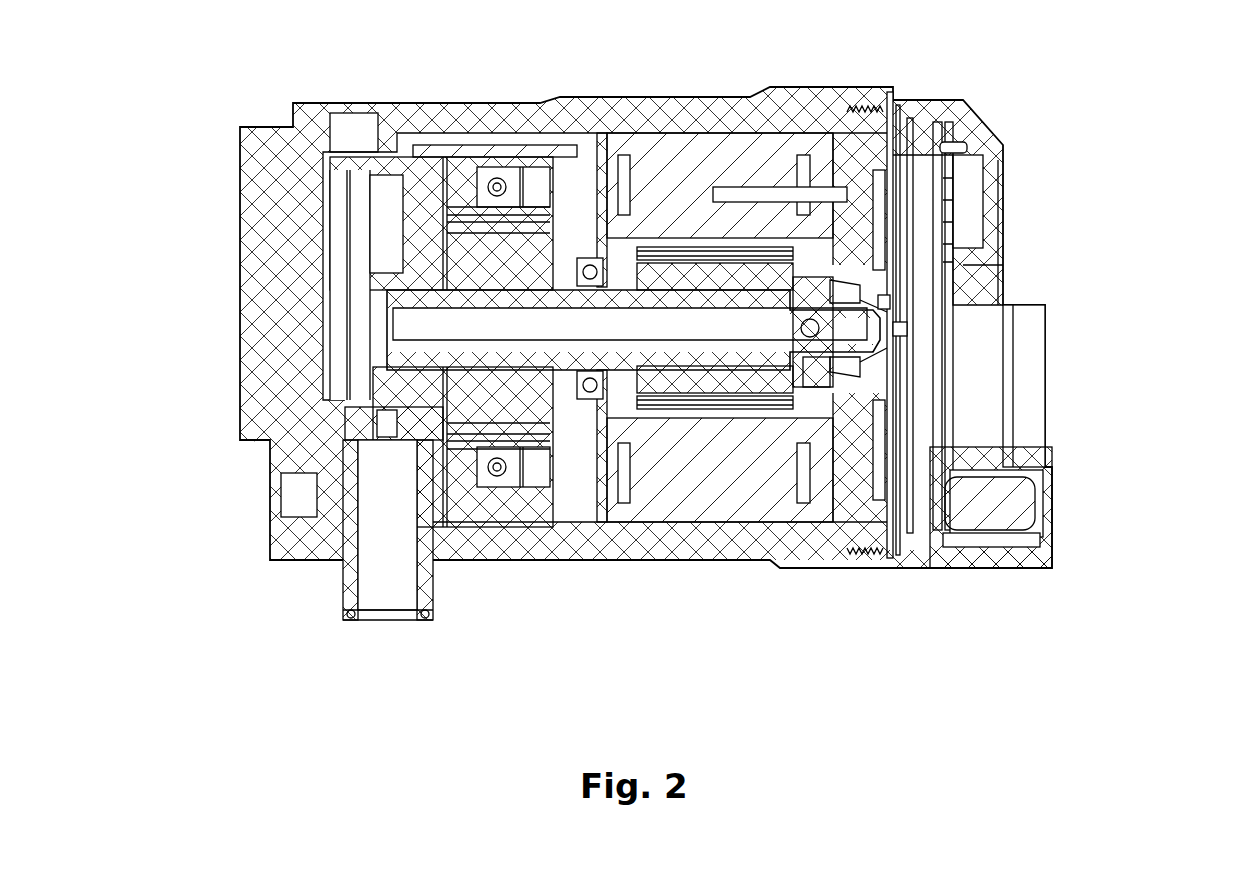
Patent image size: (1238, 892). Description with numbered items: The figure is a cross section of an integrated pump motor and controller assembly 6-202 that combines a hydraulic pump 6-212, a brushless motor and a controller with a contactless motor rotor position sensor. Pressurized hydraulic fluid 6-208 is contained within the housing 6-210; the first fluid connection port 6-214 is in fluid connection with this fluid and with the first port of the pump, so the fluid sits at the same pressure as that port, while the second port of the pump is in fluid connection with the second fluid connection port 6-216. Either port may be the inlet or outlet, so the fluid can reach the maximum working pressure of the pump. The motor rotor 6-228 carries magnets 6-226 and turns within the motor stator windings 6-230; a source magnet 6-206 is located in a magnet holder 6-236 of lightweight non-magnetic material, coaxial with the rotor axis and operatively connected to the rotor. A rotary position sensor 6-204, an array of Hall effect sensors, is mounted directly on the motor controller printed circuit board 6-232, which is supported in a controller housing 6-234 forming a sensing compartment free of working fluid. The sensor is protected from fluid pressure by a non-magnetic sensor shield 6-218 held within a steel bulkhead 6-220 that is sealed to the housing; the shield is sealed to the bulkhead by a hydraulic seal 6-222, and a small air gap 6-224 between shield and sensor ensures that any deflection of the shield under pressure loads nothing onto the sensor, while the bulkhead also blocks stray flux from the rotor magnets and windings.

The integrated pump motor and controller assembly 6-202 is at (286, 622).
The rotary position sensor 6-204 is at (900, 330).
The source magnet 6-206 is at (910, 353).
The hydraulic fluid 6-208 is at (845, 290).
The housing 6-210 is at (632, 555).
The hydraulic pump 6-212 is at (500, 255).
The first fluid connection port 6-214 is at (328, 542).
The second fluid connection port 6-216 is at (385, 487).
The sensor shield 6-218 is at (883, 302).
The bulkhead 6-220 is at (863, 162).
The hydraulic seal 6-222 is at (882, 337).
The air gap 6-224 is at (935, 335).
The magnets 6-226 is at (650, 255).
The motor rotor 6-228 is at (750, 272).
The motor stator windings 6-230 is at (713, 467).
The motor controller printed circuit board 6-232 is at (910, 270).
The controller housing 6-234 is at (915, 558).
The magnet holder 6-236 is at (810, 362).